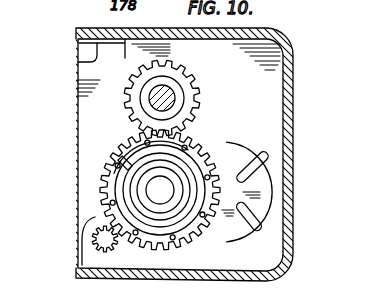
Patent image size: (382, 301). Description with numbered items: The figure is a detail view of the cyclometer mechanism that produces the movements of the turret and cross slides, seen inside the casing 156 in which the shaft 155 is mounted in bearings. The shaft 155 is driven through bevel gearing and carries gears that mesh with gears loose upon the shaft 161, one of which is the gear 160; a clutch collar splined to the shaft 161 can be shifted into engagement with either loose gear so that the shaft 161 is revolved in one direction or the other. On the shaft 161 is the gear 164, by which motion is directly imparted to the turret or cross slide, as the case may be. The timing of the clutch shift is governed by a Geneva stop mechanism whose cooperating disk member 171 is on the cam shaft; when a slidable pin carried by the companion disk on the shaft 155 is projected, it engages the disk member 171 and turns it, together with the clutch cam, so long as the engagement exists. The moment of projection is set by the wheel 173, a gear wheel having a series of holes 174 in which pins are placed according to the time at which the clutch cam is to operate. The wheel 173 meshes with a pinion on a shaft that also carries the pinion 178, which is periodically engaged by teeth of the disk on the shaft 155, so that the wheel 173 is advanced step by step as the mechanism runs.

The shaft 155 is at (160, 190).
The casing 156 is at (290, 125).
The gear 160 is at (198, 118).
The shaft 161 is at (172, 96).
The gear 164 is at (196, 107).
The disk member 171 is at (262, 189).
The wheel 173 is at (110, 174).
The holes 174 is at (147, 143).
The pinion 178 is at (105, 244).